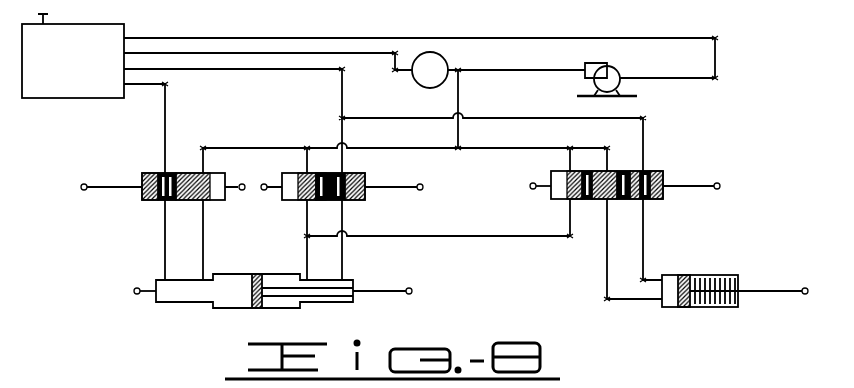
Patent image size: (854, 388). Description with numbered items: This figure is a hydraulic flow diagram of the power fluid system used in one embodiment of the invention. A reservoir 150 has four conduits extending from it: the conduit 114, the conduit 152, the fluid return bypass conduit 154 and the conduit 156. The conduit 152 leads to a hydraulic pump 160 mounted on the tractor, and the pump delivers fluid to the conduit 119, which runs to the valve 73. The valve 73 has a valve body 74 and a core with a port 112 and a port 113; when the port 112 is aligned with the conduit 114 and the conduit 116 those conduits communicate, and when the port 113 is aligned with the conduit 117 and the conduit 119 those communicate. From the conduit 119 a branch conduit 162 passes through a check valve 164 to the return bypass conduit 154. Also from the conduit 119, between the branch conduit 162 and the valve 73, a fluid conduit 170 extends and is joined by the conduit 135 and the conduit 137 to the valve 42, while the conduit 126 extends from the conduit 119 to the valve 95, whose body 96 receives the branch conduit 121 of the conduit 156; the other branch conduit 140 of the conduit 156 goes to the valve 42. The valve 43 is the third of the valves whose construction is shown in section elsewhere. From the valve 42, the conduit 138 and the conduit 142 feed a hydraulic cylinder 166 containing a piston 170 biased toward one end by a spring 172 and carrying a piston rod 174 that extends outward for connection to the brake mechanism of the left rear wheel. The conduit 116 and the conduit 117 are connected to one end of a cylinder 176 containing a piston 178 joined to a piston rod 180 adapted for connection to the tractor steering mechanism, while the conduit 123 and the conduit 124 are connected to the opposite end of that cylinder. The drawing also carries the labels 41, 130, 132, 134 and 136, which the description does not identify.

The valve port connection 41 is at (719, 186).
The valve 42 is at (549, 195).
The valve 43 is at (624, 195).
The valve 73 is at (208, 203).
The valve body 74 is at (239, 204).
The valve 95 is at (314, 213).
The valve body 96 is at (352, 172).
The port 112 is at (142, 198).
The port 113 is at (188, 203).
The hydraulic fluid conduit 114 is at (163, 111).
The conduit 116 is at (164, 243).
The conduit 117 is at (205, 257).
The conduit 119 is at (205, 148).
The branch conduit 121 is at (346, 160).
The conduit 123 is at (343, 272).
The conduit 124 is at (306, 253).
The conduit 126 is at (306, 160).
The fluid line 130 is at (585, 200).
The valve land 132 is at (624, 200).
The valve land 134 is at (654, 200).
The conduit 135 is at (568, 159).
The fluid line 136 is at (422, 236).
The conduit 137 is at (606, 160).
The conduit 138 is at (606, 259).
The branch conduit 140 is at (553, 118).
The conduit 142 is at (644, 254).
The reservoir 150 is at (62, 88).
The conduit 152 is at (224, 37).
The fluid return bypass conduit 154 is at (255, 53).
The conduit 156 is at (238, 70).
The hydraulic pump 160 is at (607, 73).
The branch conduit 162 is at (449, 79).
The check valve 164 is at (441, 98).
The hydraulic cylinder 166 is at (717, 291).
The fluid conduit / piston 170 is at (468, 148).
The spring 172 is at (712, 285).
The piston rod 174 is at (752, 294).
The cylinder 176 is at (273, 303).
The piston 178 is at (255, 309).
The piston rod 180 is at (372, 293).